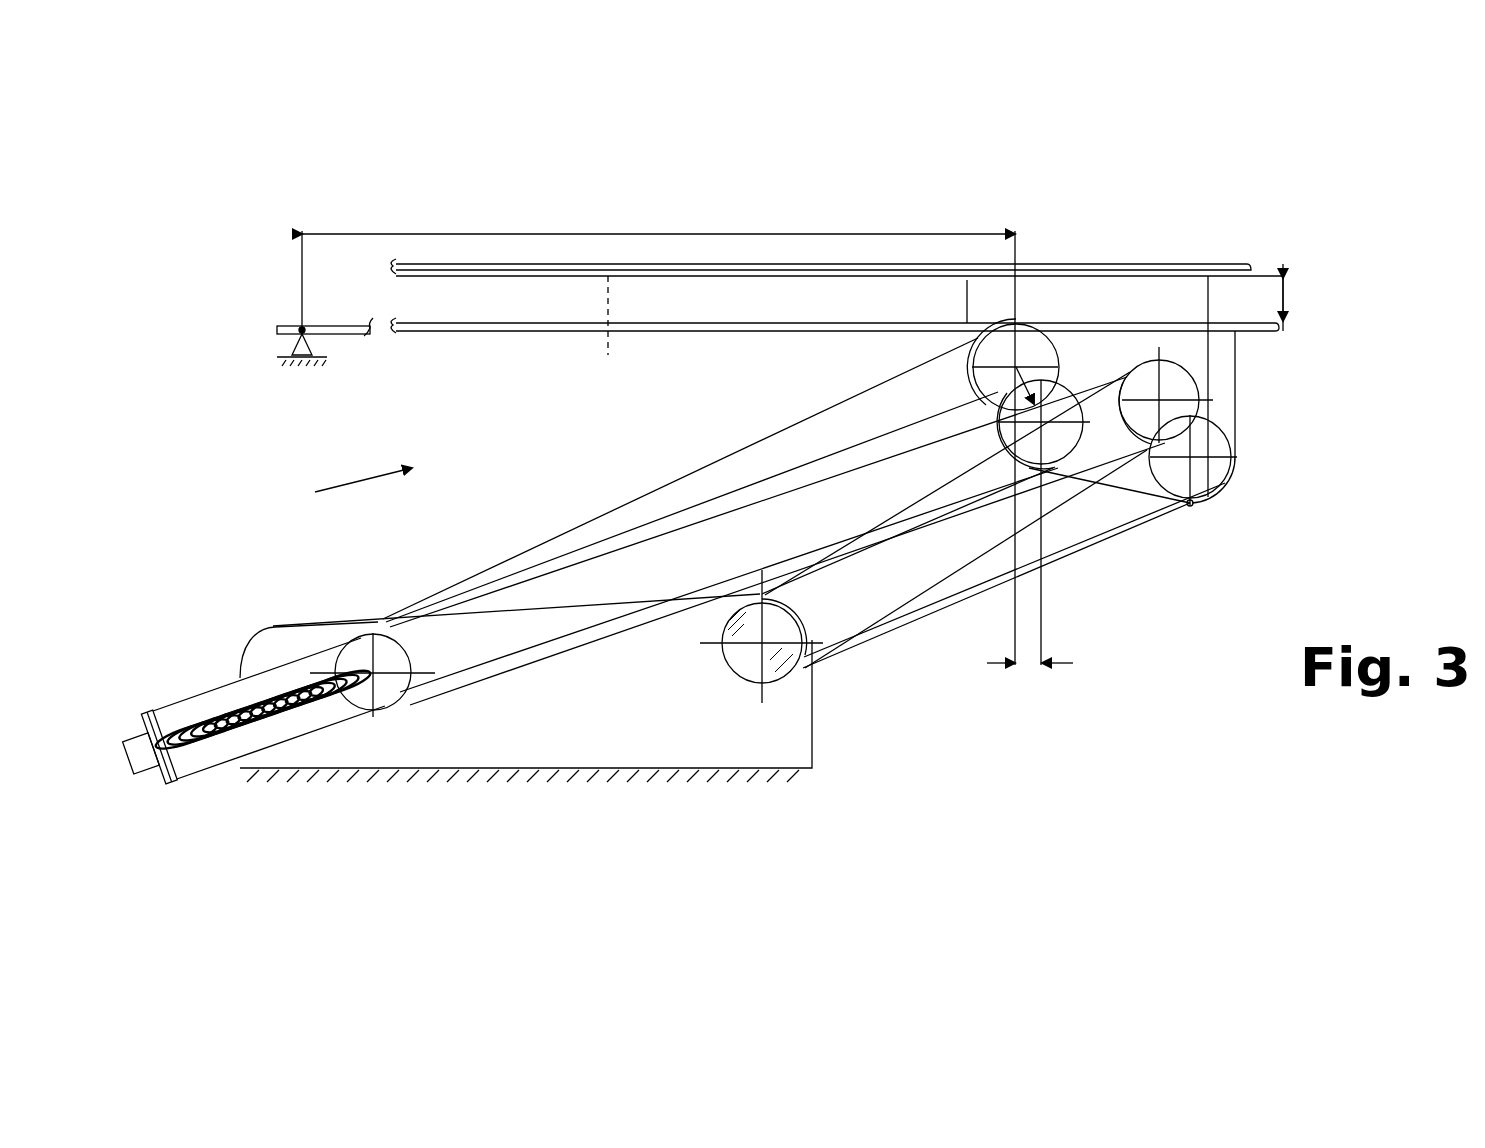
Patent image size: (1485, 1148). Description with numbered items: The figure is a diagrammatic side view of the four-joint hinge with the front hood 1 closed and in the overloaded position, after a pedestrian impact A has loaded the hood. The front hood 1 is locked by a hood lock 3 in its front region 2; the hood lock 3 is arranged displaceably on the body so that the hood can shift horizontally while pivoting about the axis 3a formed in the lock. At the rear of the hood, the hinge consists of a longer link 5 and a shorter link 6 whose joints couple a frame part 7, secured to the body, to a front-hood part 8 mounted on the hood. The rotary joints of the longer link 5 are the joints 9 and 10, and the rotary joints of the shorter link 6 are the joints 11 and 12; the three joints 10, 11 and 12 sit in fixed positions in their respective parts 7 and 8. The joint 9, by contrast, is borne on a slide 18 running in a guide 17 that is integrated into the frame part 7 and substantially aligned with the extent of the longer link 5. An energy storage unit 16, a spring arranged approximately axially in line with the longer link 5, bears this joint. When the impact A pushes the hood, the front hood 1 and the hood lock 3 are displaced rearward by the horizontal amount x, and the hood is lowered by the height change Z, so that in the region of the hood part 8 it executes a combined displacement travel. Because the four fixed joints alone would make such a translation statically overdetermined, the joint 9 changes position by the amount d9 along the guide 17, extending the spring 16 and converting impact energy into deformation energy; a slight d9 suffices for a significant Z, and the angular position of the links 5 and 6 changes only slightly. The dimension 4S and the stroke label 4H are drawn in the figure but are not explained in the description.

The front hood 1 is at (575, 330).
The front region 2 is at (338, 328).
The hood lock 3 is at (297, 342).
The axis 3a is at (300, 328).
The spindle travel 4S is at (777, 230).
The stroke travel 4H is at (910, 640).
The longer link 5 is at (647, 492).
The shorter link 6 is at (1143, 523).
The frame part 7 is at (526, 711).
The front-hood part 8 is at (1036, 364).
The rotary joint 9 is at (405, 685).
The rotary joint 10 is at (1062, 398).
The rotary joint 11 is at (743, 655).
The rotary joint 12 is at (1180, 388).
The energy storage unit 16 is at (220, 753).
The guide 17 is at (192, 693).
The slide 18 is at (375, 703).
The impact A is at (1152, 250).
The change in height Z is at (1260, 297).
The horizontal displacement x is at (1049, 666).
The change in position of the joint d9 is at (363, 510).